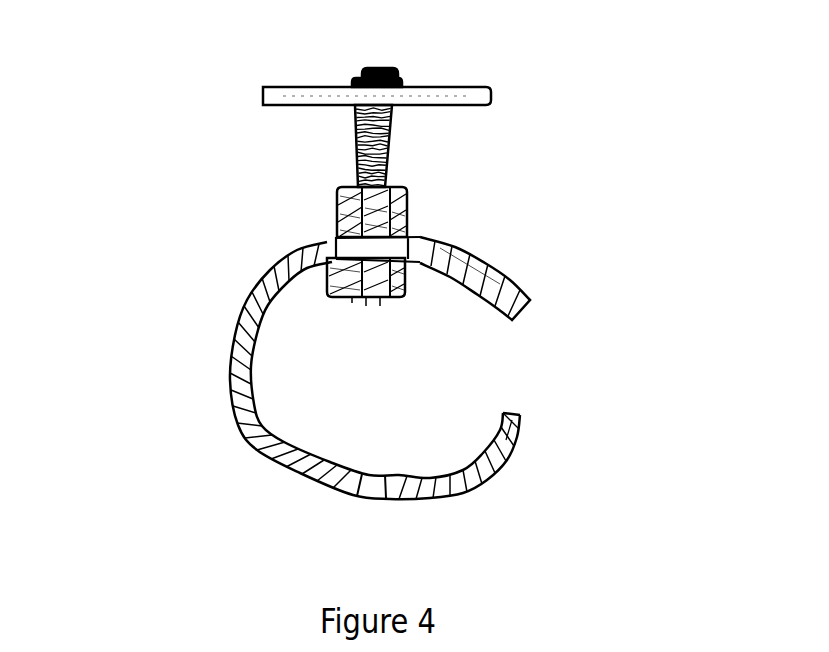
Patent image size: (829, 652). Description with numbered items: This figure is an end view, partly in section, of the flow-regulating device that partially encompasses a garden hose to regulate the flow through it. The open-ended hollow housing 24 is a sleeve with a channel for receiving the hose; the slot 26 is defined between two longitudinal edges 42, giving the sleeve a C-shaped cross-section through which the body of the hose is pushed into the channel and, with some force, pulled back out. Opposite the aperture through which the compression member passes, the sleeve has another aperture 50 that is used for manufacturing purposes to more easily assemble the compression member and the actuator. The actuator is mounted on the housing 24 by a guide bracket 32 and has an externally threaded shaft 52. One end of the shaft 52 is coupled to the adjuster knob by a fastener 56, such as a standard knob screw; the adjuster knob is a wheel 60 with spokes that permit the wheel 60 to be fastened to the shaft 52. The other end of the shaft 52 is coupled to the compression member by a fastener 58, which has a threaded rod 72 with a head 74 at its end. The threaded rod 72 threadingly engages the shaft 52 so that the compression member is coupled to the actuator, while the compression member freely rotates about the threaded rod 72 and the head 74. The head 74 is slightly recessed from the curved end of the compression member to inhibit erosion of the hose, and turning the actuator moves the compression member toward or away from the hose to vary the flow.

The open-ended hollow housing 24 is at (260, 449).
The longitudinal slot 26 is at (511, 382).
The guide bracket 32 is at (410, 213).
The longitudinal edges 42 is at (536, 312).
The aperture 50 is at (372, 494).
The externally threaded shaft 52 is at (392, 142).
The fastener 56 is at (385, 69).
The fastener 58 is at (357, 310).
The wheel 60 is at (490, 98).
The threaded rod 72 is at (400, 270).
The head 74 is at (373, 300).